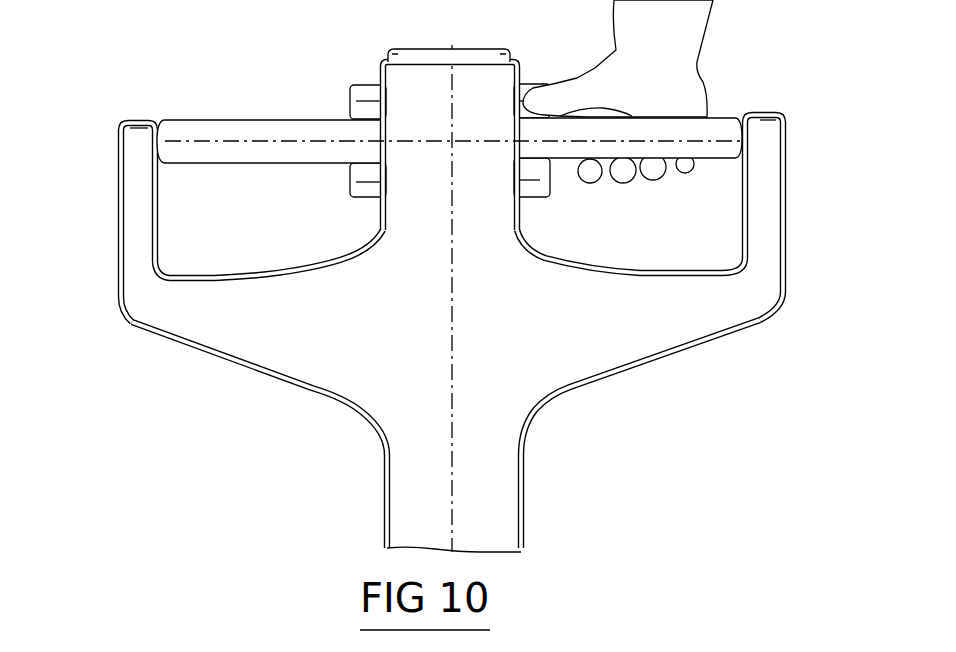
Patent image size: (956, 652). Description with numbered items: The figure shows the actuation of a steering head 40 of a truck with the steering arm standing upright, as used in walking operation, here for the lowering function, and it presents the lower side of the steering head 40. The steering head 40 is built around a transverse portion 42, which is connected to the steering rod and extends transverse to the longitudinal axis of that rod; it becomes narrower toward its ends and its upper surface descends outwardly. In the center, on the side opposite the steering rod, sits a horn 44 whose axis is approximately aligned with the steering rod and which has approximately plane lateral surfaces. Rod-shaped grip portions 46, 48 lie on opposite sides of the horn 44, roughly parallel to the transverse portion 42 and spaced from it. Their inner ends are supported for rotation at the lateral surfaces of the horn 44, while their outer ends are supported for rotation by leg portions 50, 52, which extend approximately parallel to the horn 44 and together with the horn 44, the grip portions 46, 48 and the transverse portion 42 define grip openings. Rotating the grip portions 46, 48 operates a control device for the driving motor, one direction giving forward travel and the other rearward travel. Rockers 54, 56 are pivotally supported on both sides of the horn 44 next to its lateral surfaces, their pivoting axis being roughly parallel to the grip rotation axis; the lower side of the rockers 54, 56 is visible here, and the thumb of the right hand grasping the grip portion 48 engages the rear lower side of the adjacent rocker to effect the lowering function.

The steering head 40 is at (461, 276).
The transverse portion 42 is at (412, 344).
The horn 44 is at (441, 129).
The grip portion 46 is at (188, 130).
The grip portion 48 is at (722, 128).
The leg portion 50 is at (121, 209).
The leg portion 52 is at (768, 207).
The rocker 54 is at (362, 96).
The rocker 56 is at (534, 84).